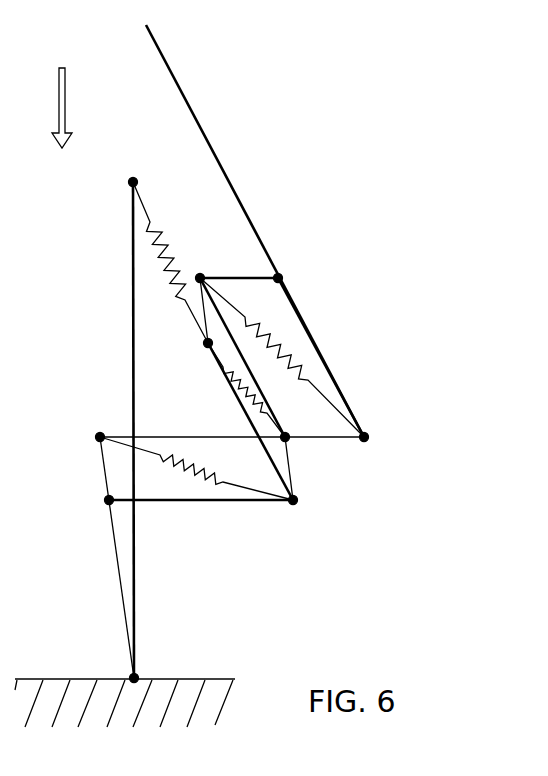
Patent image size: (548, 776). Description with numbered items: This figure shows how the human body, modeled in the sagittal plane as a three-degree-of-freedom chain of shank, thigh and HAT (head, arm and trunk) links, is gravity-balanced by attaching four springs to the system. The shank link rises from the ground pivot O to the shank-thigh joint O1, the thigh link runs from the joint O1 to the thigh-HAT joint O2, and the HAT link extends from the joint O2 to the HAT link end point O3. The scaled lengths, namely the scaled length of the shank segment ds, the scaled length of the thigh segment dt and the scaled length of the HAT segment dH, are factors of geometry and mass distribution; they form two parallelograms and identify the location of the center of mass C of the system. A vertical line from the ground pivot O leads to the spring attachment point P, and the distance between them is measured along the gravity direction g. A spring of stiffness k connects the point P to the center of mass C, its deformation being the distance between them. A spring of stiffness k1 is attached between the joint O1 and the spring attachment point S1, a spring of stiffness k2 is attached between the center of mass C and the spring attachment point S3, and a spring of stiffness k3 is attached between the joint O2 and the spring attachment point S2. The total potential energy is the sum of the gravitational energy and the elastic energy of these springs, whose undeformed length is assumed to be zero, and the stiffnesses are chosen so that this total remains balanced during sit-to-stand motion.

The HAT link end point O3 is at (238, 229).
The spring attachment point P is at (125, 420).
The gravity direction g is at (62, 121).
The spring stiffness k is at (168, 242).
The spring attachment point S2 is at (198, 270).
The center of mass C is at (238, 419).
The spring stiffness k3 is at (270, 336).
The scaled length of HAT segment dH is at (321, 357).
The spring stiffness k2 is at (244, 394).
The shank-thigh joint O1 is at (213, 438).
The spring attachment point S3 is at (290, 440).
The thigh-HAT joint O2 is at (381, 441).
The spring stiffness k1 is at (180, 456).
The scaled length of thigh segment dt is at (201, 516).
The spring attachment point S1 is at (296, 504).
The scaled length of shank segment ds is at (117, 557).
The ground pivot O is at (147, 668).